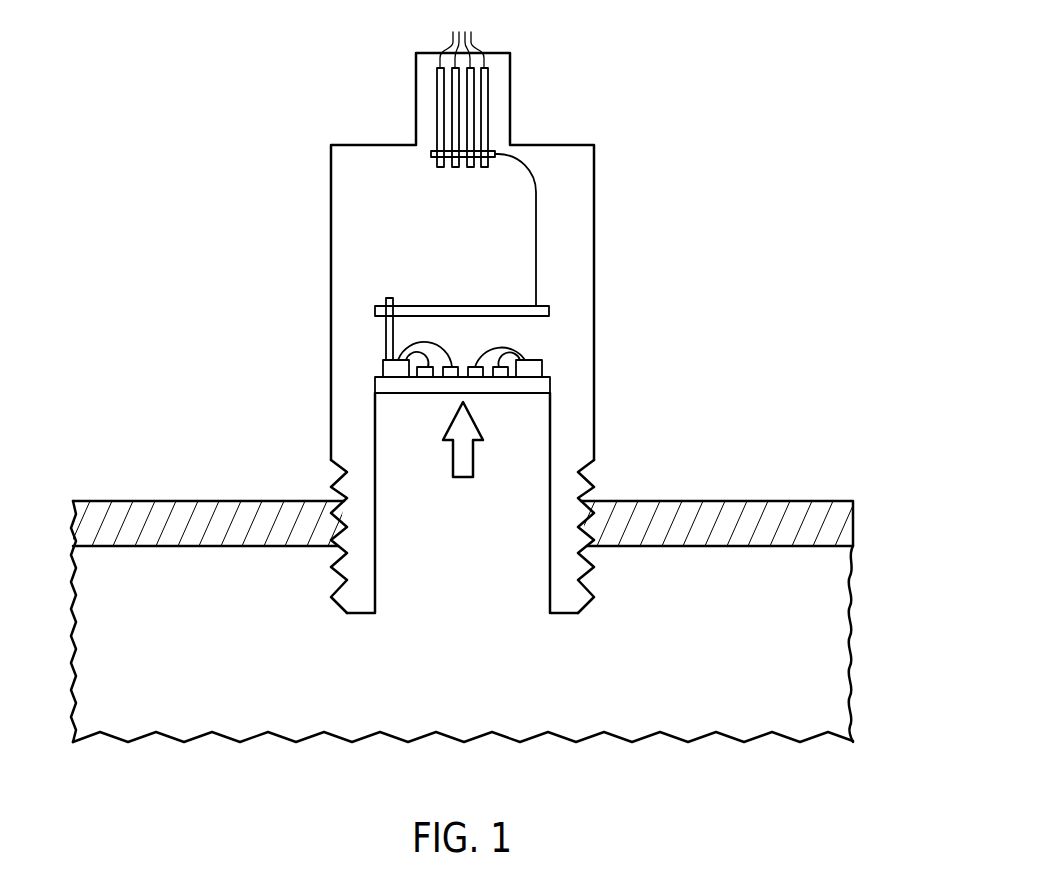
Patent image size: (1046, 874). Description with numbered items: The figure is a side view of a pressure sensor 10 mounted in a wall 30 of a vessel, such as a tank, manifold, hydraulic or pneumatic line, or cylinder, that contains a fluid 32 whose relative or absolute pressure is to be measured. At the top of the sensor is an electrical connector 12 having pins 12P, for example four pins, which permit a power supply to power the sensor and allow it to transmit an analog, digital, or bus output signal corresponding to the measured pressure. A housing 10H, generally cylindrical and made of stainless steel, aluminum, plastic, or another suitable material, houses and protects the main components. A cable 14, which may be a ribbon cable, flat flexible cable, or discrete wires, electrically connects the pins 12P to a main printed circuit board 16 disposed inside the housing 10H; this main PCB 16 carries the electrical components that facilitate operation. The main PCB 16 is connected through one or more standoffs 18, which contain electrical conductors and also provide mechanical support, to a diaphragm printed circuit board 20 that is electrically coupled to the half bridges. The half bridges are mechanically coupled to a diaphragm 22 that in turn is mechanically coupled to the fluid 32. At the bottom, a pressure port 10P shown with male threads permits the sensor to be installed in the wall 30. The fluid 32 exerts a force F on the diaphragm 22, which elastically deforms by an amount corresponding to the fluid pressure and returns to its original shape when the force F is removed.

The pressure sensor 10 is at (489, 309).
The housing 10H is at (331, 208).
The pressure port 10P is at (332, 572).
The electrical connector 12 is at (417, 86).
The pins 12P is at (464, 36).
The cable 14 is at (535, 203).
The main printed circuit board 16 is at (463, 306).
The standoffs 18 is at (373, 333).
The diaphragm printed circuit board 20 is at (382, 369).
The diaphragm 22 is at (373, 388).
The wall 30 is at (780, 501).
The fluid 32 is at (865, 545).
The force F is at (485, 455).